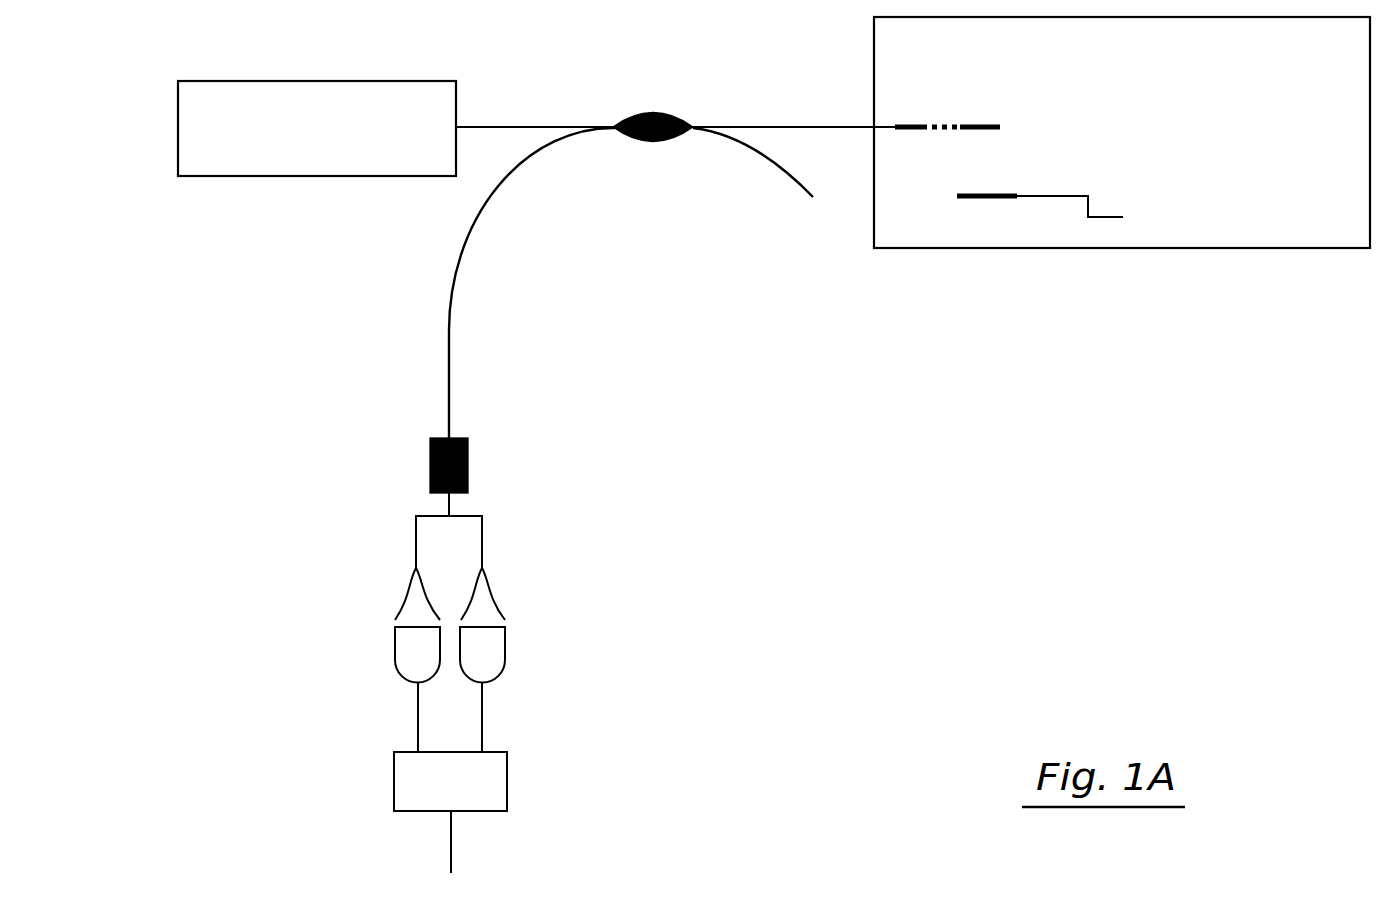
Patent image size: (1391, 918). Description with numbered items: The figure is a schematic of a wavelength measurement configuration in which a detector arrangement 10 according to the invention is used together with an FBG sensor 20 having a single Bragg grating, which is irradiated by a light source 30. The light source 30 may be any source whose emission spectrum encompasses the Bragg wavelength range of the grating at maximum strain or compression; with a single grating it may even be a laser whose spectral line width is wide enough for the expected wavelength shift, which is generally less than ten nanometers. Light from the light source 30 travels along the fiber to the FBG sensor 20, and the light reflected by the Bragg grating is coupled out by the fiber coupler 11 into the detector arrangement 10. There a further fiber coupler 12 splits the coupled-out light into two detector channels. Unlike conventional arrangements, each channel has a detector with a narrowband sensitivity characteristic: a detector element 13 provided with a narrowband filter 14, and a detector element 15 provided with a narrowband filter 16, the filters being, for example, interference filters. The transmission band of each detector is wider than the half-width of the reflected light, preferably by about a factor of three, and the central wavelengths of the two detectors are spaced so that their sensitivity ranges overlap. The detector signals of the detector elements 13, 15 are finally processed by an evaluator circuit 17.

The detector arrangement 10 is at (568, 408).
The fiber coupler 11 is at (658, 109).
The fiber coupler 12 is at (470, 466).
The detector element 13 is at (508, 636).
The narrowband filter 14 is at (498, 615).
The detector element 15 is at (392, 636).
The narrowband filter 16 is at (402, 615).
The evaluator circuit 17 is at (510, 765).
The FBG sensor 20 is at (1263, 138).
The light source 30 is at (421, 142).